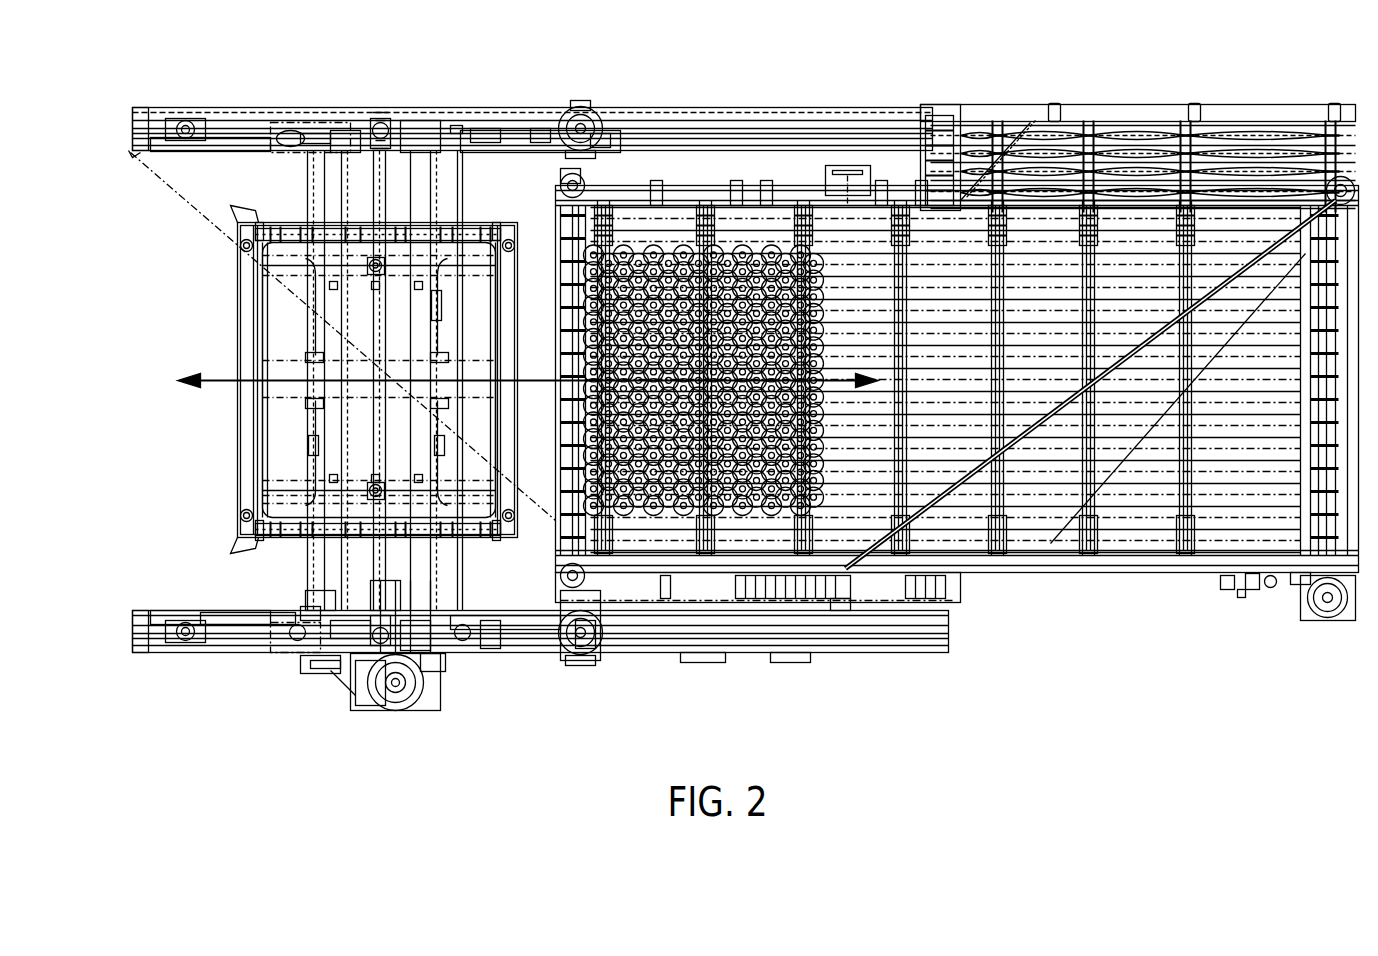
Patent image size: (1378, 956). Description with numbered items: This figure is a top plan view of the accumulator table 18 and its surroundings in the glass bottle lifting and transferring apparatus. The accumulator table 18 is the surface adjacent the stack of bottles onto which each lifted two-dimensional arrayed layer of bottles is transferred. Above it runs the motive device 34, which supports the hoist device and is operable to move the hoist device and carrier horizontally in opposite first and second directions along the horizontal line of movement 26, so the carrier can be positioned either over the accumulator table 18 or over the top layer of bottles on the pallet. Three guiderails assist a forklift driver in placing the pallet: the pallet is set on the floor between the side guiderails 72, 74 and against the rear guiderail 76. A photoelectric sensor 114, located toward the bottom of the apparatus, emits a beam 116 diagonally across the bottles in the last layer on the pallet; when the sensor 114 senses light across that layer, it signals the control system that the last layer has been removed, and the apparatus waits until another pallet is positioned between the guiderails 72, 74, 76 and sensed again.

The accumulator table 18 is at (757, 247).
The horizontal line of movement 26 is at (223, 380).
The motive device 34 is at (246, 107).
The side guiderail 72 is at (283, 533).
The side guiderail 74 is at (283, 227).
The rear guiderail 76 is at (408, 296).
The photoelectric sensor 114 is at (131, 153).
The beam 116 is at (197, 210).